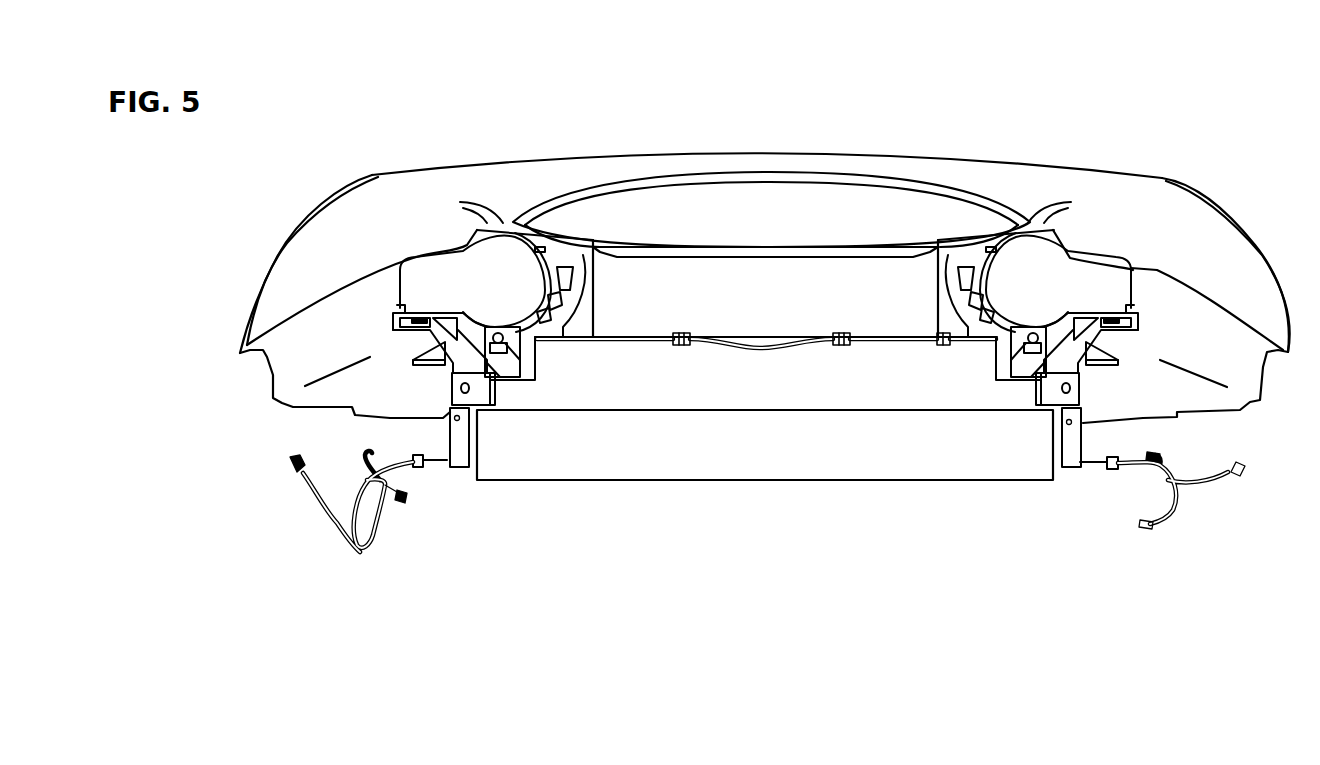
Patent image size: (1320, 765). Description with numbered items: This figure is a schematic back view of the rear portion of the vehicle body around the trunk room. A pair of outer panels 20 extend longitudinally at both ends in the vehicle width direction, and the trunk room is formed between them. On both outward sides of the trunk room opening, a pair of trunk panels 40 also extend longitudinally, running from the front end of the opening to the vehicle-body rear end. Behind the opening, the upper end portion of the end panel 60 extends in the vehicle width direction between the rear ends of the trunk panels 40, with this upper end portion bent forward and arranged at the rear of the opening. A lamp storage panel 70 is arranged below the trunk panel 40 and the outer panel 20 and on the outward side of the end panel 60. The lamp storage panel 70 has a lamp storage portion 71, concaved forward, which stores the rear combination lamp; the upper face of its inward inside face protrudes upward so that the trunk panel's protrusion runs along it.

The outer panel 20 is at (327, 226).
The trunk panel 40 is at (475, 205).
The end panel 60 is at (768, 388).
The lamp storage panel 70 is at (532, 317).
The lamp storage portion 71 is at (498, 287).